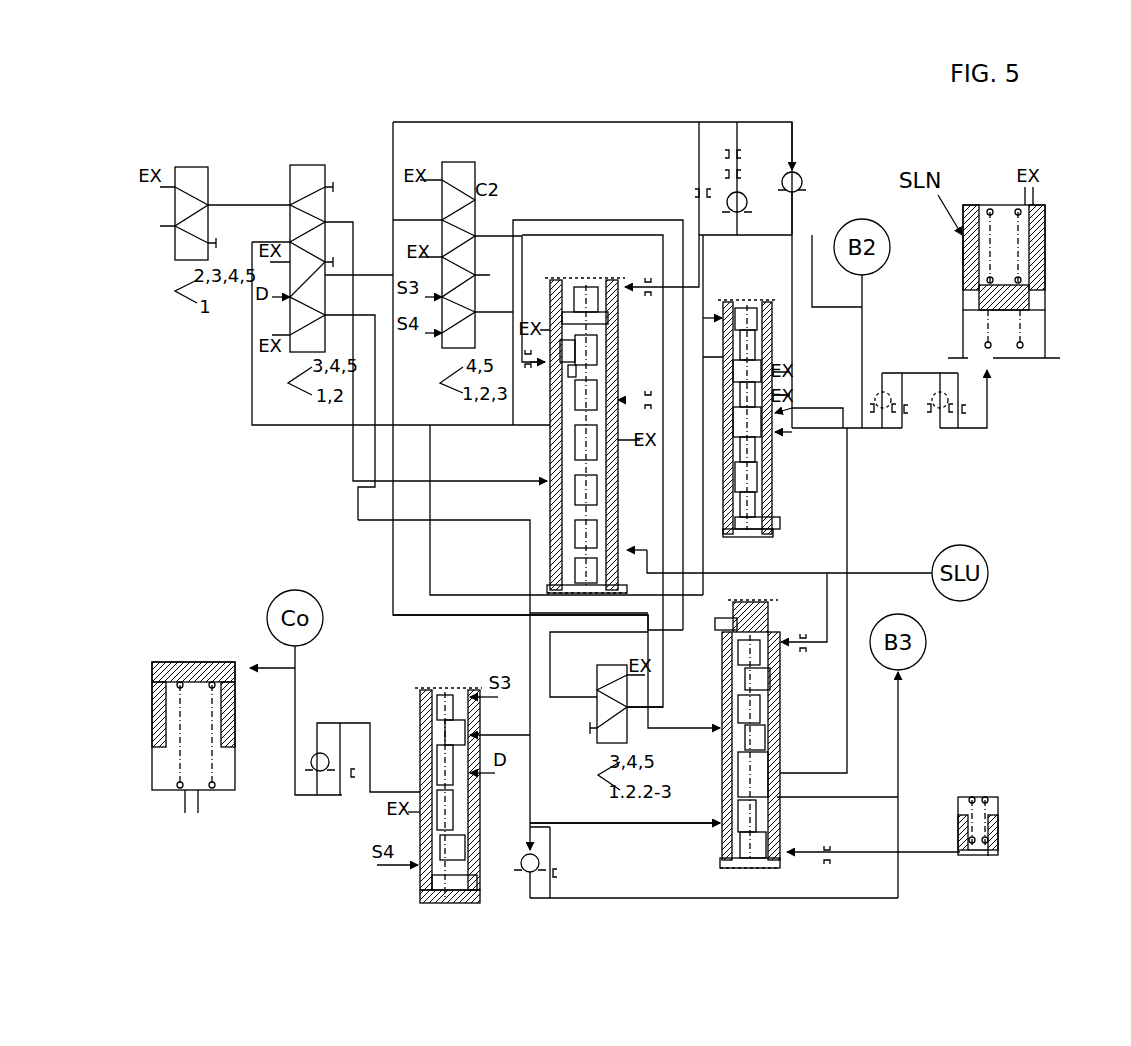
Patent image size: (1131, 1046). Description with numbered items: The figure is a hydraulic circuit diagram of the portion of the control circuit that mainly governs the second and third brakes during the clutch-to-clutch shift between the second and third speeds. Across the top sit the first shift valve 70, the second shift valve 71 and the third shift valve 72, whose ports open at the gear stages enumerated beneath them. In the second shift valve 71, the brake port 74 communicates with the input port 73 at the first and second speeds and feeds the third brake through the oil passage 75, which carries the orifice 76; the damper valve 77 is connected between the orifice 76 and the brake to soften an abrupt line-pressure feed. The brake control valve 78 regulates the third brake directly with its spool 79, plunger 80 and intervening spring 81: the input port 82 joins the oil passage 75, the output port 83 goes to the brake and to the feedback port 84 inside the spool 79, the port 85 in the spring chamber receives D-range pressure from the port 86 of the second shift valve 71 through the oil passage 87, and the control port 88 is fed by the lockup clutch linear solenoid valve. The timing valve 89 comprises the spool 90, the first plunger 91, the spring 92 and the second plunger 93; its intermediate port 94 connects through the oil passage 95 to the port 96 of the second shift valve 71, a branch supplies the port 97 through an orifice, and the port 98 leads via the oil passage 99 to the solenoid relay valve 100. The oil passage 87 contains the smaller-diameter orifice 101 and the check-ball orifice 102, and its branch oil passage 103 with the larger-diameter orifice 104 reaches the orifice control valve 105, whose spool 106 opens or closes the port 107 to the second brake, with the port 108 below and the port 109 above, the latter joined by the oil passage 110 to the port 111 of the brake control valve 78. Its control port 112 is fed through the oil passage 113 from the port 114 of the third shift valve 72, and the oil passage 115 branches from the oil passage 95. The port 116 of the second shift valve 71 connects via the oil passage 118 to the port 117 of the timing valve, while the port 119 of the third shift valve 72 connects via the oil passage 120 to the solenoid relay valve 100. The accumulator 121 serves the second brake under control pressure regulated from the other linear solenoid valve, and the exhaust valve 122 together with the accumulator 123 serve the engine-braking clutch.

The 1-2 shift valve 70 is at (190, 160).
The 2-3 shift valve 71 is at (308, 160).
The 3-4 shift valve 72 is at (478, 163).
The input port 73 is at (282, 203).
The brake port 74 is at (330, 221).
The oil passage 75 is at (352, 481).
The orifice 76 is at (545, 864).
The damper valve 77 is at (999, 818).
The B-3 control valve 78 is at (702, 862).
The spool 79 is at (734, 742).
The plunger 80 is at (770, 690).
The spring 81 is at (736, 718).
The input port 82 is at (718, 828).
The output port 83 is at (770, 810).
The feedback port 84 is at (792, 857).
The port 85 is at (768, 736).
The port 86 is at (350, 274).
The oil passage 87 is at (437, 122).
The control port 88 is at (772, 622).
The 2-3 timing valve 89 is at (587, 418).
The spool 90 is at (600, 352).
The first plunger 91 is at (600, 533).
The spring 92 is at (600, 497).
The second plunger 93 is at (574, 290).
The intermediate port 94 is at (546, 428).
The oil passage 95 is at (272, 427).
The port 96 is at (286, 242).
The port 97 is at (562, 372).
The port 98 is at (600, 388).
The oil passage 99 is at (552, 642).
The solenoid relay valve 100 is at (592, 750).
The smaller-diameter orifice 101 is at (692, 194).
The orifice having a check ball 102 is at (716, 182).
The oil passage 103 is at (795, 142).
The larger-diameter orifice 104 is at (803, 184).
The orifice control valve 105 is at (786, 540).
The spool 106 is at (774, 433).
The port 107 is at (780, 440).
The port 108 is at (776, 456).
The port 109 is at (795, 400).
The oil passage 110 is at (848, 524).
The port 111 is at (790, 798).
The control port 112 is at (712, 316).
The oil passage 113 is at (548, 234).
The port 114 is at (494, 311).
The oil passage 115 is at (432, 576).
The port 116 is at (330, 315).
The port 117 is at (525, 485).
The oil passage 118 is at (372, 490).
The port 119 is at (497, 232).
The oil passage 120 is at (598, 220).
The accumulator 121 is at (1046, 337).
The C-0 exhaust valve 122 is at (442, 684).
The accumulator 123 is at (240, 770).